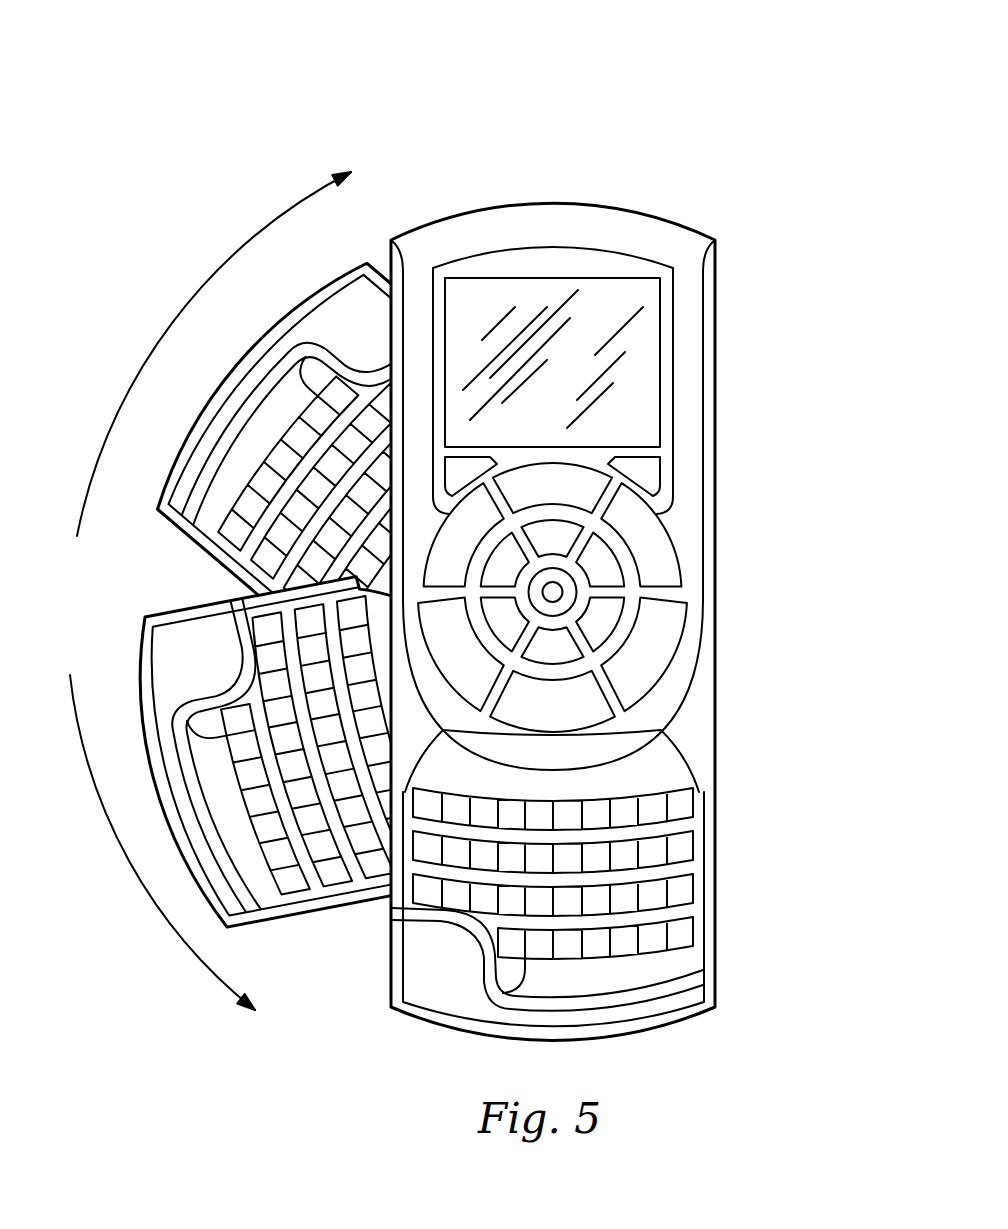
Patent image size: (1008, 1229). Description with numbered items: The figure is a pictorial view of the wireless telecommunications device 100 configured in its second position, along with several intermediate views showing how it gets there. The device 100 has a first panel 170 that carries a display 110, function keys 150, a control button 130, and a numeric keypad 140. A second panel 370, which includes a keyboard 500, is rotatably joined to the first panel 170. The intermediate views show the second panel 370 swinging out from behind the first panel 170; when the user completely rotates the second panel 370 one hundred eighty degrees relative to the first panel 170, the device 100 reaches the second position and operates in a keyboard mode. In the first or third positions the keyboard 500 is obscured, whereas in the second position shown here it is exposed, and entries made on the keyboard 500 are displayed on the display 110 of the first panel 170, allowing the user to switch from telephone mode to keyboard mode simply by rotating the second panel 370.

The wireless telecommunications device 100 is at (306, 120).
The display 110 is at (628, 364).
The control button 130 is at (552, 593).
The numeric keypad 140 is at (647, 635).
The function keys 150 is at (645, 473).
The first panel 170 is at (804, 204).
The second panel 370 is at (442, 640).
The keyboard 500 is at (490, 995).